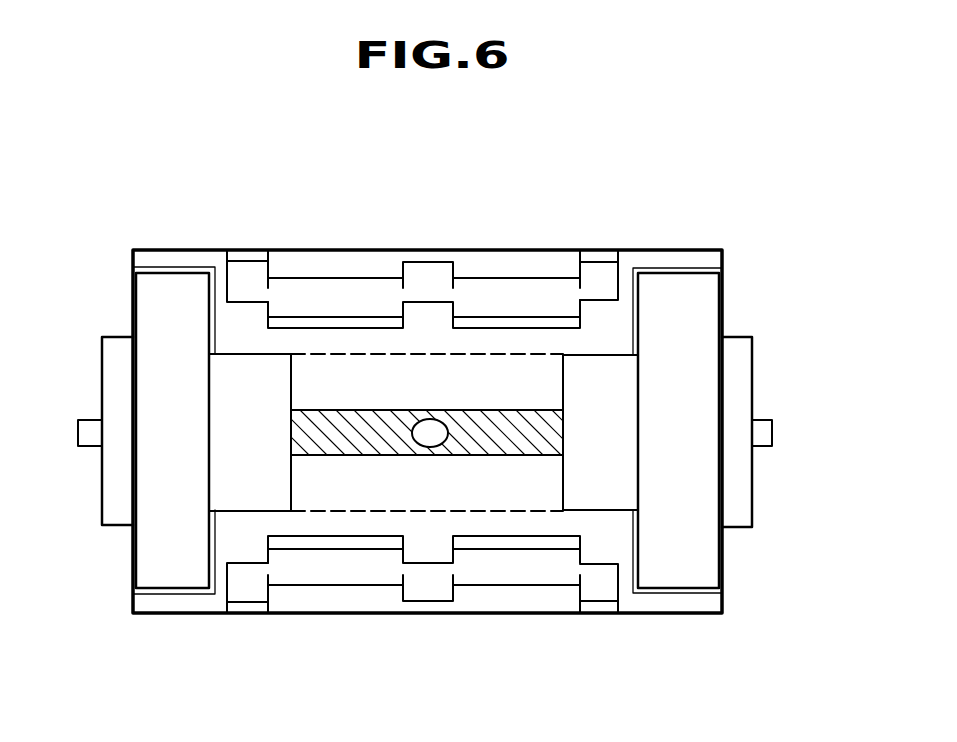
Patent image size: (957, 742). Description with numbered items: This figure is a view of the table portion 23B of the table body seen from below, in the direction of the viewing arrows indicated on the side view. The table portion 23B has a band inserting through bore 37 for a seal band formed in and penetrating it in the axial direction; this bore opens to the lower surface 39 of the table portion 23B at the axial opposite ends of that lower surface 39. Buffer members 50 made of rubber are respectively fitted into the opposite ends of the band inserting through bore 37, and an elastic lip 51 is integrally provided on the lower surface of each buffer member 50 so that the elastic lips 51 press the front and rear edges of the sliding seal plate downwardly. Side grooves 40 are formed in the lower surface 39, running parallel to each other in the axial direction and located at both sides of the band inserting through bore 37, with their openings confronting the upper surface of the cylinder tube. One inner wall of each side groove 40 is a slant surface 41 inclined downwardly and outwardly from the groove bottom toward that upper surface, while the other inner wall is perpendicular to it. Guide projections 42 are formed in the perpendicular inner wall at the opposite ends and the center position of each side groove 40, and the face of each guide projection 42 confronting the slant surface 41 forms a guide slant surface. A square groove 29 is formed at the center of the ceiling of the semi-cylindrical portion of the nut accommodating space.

The table portion 23B is at (673, 250).
The elastic lip 51 is at (153, 300).
The buffer member 50 is at (110, 361).
The band inserting through bore 37 is at (250, 510).
The square groove 29 is at (432, 421).
The slant surface 41 is at (484, 293).
The side groove 40 is at (340, 292).
The guide projection 42 is at (252, 550).
The lower surface 39 is at (617, 320).